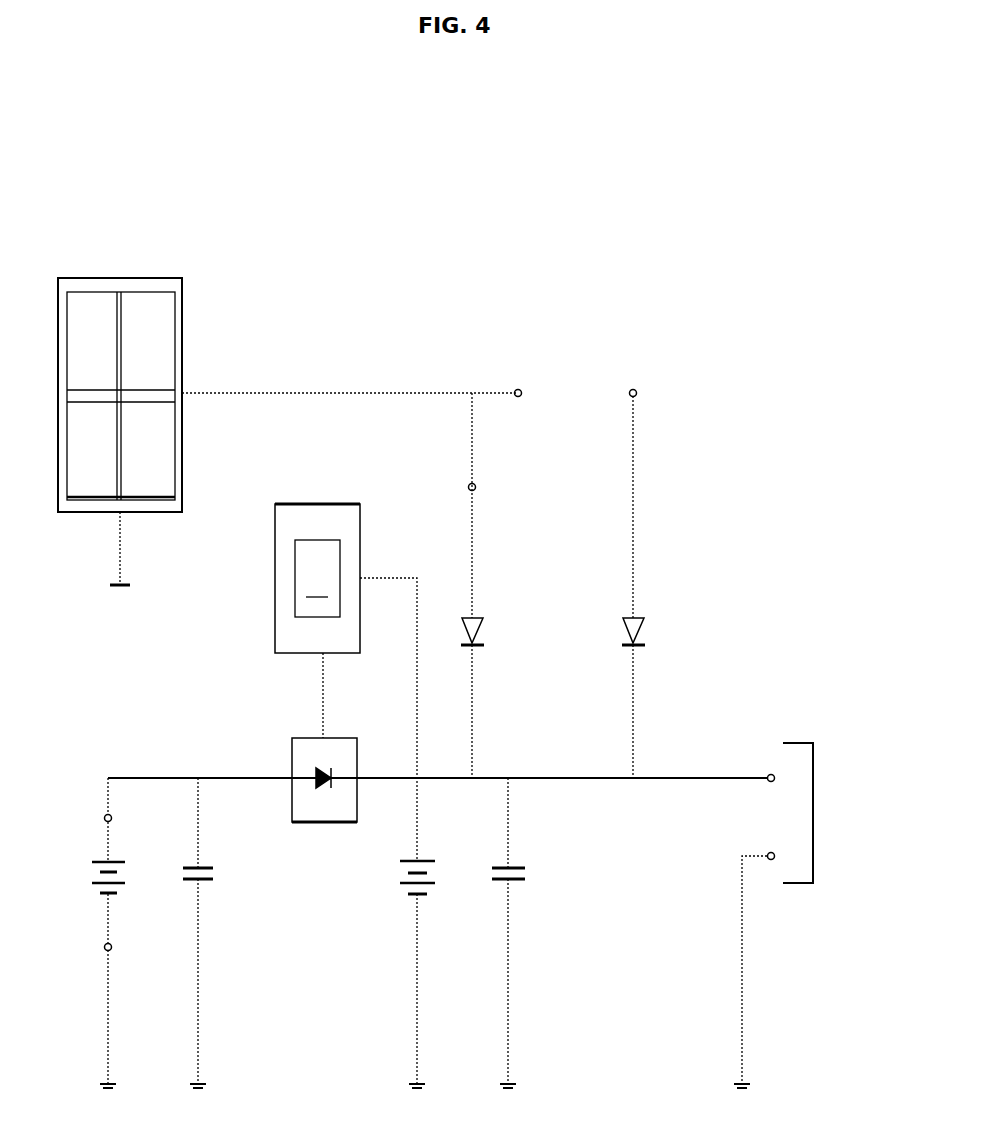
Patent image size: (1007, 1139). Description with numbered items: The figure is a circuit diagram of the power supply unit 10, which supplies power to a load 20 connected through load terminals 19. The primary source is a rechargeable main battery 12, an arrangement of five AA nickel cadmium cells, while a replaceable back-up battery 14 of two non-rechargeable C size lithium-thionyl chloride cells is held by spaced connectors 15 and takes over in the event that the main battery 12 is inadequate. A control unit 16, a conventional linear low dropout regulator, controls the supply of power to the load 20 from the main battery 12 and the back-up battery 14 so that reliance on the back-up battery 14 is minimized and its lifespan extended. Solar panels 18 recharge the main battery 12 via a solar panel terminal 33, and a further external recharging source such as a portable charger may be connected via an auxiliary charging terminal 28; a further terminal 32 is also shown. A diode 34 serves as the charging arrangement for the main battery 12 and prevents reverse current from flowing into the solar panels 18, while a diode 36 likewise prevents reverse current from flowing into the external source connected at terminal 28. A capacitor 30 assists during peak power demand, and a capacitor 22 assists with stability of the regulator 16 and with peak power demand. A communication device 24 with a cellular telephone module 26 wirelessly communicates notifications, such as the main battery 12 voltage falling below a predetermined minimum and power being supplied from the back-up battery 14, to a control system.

The power supply unit 10 is at (666, 208).
The main battery 12 is at (405, 880).
The back-up battery 14 is at (111, 933).
The connectors 15 is at (113, 820).
The control unit 16 is at (340, 738).
The solar panels 18 is at (95, 278).
The load terminals 19 is at (767, 853).
The load 20 is at (784, 906).
The capacitor 22 is at (522, 878).
The communication device 24 is at (346, 638).
The cellular telephone module 26 is at (317, 578).
The auxiliary charging terminal 28 is at (638, 390).
The capacitor 30 is at (205, 878).
The terminal 32 is at (523, 390).
The solar panel terminal 33 is at (477, 485).
The diode 34 is at (480, 632).
The diode 36 is at (641, 632).